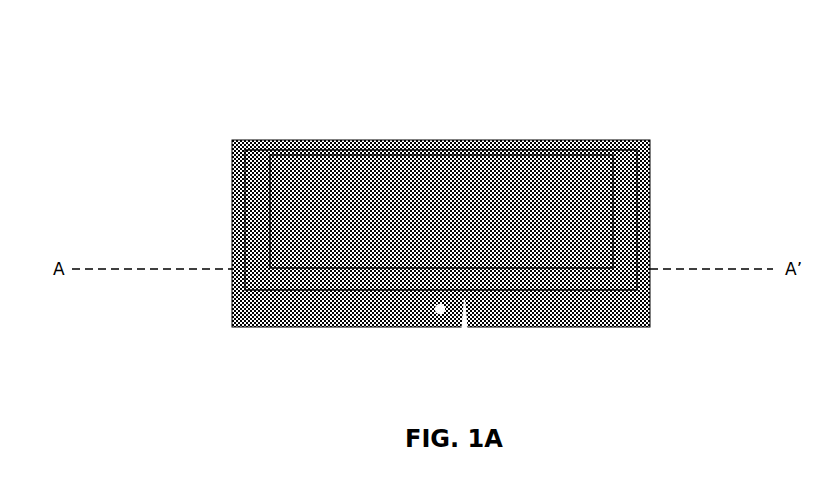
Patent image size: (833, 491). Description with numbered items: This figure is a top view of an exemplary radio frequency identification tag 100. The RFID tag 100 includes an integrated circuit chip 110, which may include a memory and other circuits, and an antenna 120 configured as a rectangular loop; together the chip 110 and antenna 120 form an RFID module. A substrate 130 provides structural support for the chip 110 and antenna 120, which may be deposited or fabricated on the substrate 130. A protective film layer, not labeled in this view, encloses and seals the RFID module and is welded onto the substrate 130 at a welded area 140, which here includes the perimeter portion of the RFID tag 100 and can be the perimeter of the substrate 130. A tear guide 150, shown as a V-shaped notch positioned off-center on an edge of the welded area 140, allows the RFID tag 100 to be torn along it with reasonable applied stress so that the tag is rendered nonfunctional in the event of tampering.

The RFID tag 100 is at (184, 88).
The integrated circuit chip 110 is at (487, 138).
The antenna 120 is at (635, 138).
The substrate 130 is at (232, 275).
The welded area 140 is at (652, 297).
The tear guide 150 is at (477, 323).